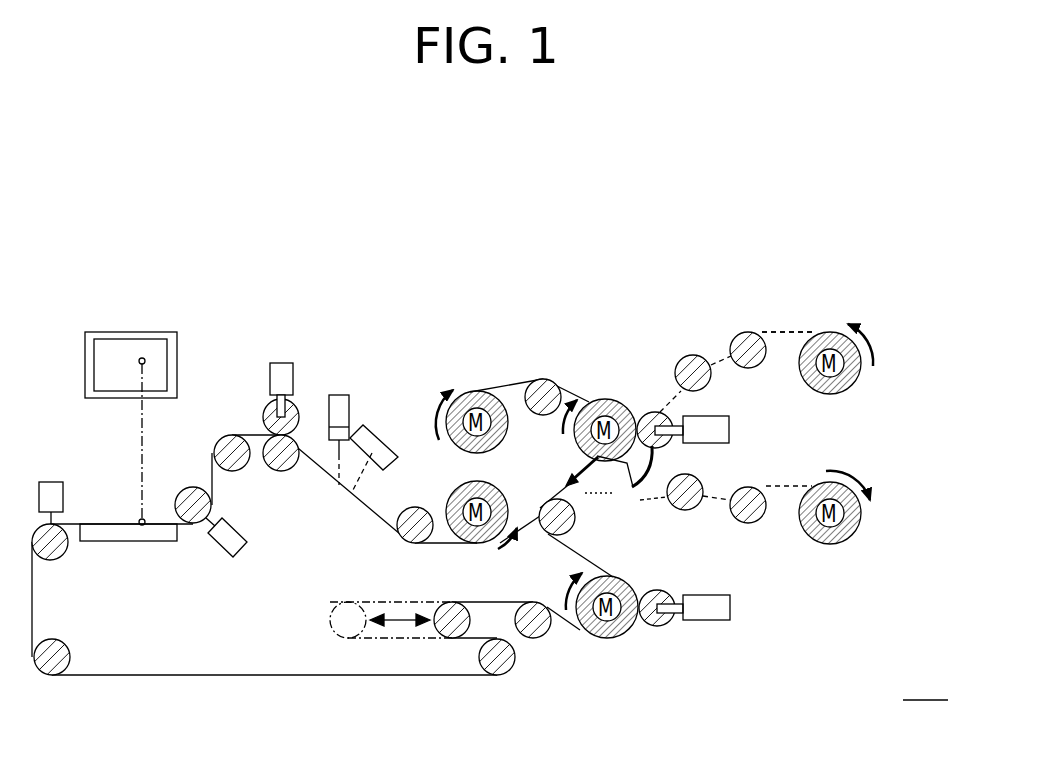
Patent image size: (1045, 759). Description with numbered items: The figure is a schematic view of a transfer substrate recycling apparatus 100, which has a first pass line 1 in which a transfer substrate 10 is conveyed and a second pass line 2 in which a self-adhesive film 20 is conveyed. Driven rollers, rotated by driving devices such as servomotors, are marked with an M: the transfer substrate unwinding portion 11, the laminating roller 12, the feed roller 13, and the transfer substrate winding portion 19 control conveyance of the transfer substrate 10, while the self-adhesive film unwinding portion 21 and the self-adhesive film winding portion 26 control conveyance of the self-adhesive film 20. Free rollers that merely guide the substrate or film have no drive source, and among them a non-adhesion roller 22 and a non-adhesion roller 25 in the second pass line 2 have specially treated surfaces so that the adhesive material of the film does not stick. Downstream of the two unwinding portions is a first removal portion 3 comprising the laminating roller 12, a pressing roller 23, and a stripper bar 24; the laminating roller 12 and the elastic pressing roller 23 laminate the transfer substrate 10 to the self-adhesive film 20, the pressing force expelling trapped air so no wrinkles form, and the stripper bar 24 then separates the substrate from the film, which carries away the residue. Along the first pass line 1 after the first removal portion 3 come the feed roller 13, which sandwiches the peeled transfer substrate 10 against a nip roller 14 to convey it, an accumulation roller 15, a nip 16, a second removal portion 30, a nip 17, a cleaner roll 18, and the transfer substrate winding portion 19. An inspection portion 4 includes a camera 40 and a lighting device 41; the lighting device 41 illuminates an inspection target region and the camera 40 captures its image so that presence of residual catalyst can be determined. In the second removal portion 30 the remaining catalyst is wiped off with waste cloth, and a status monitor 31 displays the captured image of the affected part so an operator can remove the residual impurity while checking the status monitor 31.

The first pass line 1 is at (322, 423).
The second pass line 2 is at (736, 341).
The first removal portion 3 is at (609, 505).
The inspection portion 4 is at (375, 378).
The transfer substrate 10 is at (527, 382).
The transfer substrate unwinding portion 11 is at (472, 395).
The laminating roller 12 is at (609, 398).
The feed roller 13 is at (613, 640).
The nip roller 14 is at (667, 627).
The accumulation roller 15 is at (437, 603).
The nip 16 is at (52, 486).
The nip 17 is at (229, 543).
The cleaner roll 18 is at (282, 363).
The transfer substrate winding portion 19 is at (497, 488).
The self-adhesive film 20 is at (777, 330).
The self-adhesive film unwinding portion 21 is at (853, 387).
The non-adhesion roller 22 is at (697, 355).
The pressing roller 23 is at (731, 428).
The stripper bar 24 is at (639, 493).
The non-adhesion roller 25 is at (757, 527).
The self-adhesive film winding portion 26 is at (848, 543).
The second removal portion 30 is at (158, 534).
The status monitor 31 is at (142, 332).
The camera 40 is at (343, 395).
The lighting device 41 is at (382, 447).
The transfer substrate recycling apparatus 100 is at (925, 684).